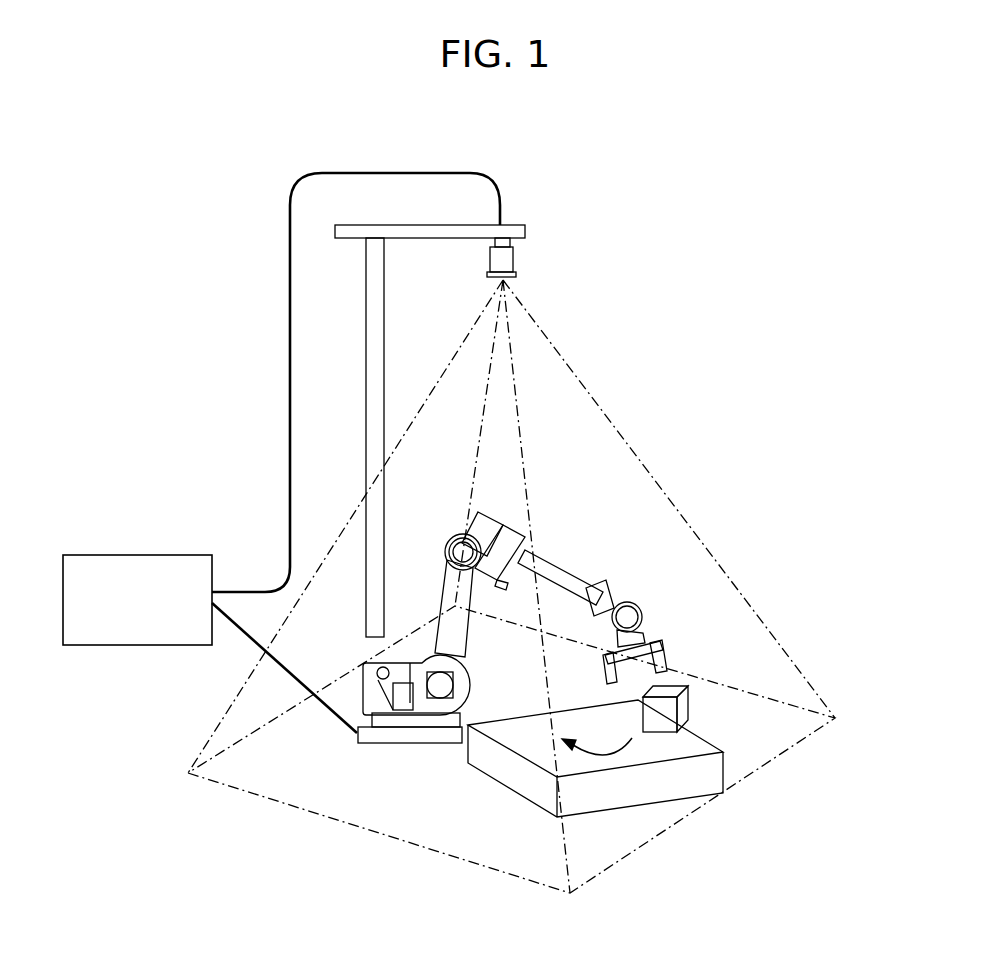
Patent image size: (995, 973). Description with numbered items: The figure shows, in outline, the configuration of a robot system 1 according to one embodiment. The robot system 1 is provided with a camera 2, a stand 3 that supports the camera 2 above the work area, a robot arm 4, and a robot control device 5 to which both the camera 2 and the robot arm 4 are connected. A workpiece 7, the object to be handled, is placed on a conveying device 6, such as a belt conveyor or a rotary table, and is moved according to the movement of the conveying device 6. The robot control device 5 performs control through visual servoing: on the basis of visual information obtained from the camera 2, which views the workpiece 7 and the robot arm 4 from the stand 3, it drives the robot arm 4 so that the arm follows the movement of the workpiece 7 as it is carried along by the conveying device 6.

The robot system 1 is at (774, 239).
The camera 2 is at (513, 262).
The stand 3 is at (378, 225).
The robot arm 4 is at (567, 567).
The robot control device 5 is at (122, 555).
The conveying device 6 is at (723, 770).
The workpiece 7 is at (677, 688).